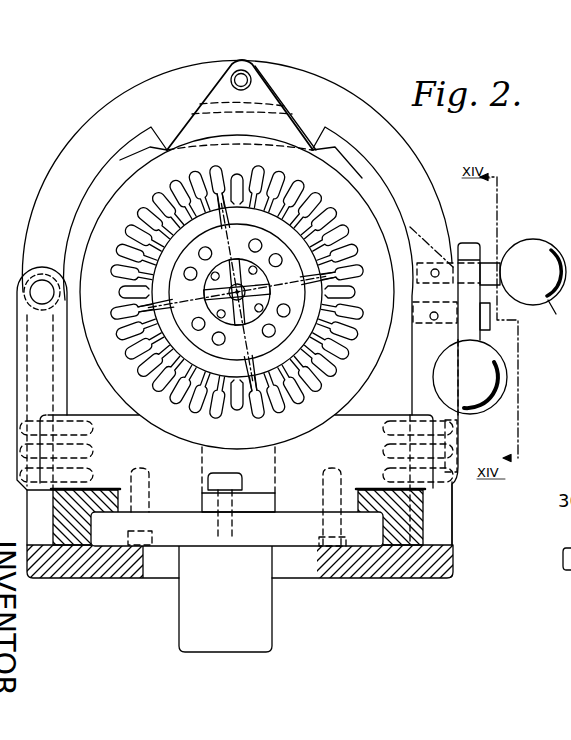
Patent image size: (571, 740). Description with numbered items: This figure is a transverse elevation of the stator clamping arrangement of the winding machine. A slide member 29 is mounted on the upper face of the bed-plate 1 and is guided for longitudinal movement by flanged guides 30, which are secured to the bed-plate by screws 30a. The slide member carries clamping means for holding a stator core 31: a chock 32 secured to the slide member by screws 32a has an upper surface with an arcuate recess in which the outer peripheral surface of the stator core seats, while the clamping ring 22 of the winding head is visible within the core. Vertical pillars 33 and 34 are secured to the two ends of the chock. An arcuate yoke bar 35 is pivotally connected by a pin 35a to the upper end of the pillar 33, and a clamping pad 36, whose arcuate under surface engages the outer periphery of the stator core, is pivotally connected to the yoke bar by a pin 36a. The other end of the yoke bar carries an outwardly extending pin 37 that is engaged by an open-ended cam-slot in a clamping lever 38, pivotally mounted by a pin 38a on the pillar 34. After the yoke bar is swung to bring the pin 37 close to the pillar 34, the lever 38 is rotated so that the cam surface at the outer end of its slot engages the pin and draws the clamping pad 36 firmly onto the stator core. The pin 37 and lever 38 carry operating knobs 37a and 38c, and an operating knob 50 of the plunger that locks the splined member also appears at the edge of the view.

The bed-plate 1 is at (383, 570).
The clamping ring 22 is at (192, 252).
The slide member 29 is at (352, 565).
The flanged guides 30 is at (62, 538).
The screws 30a is at (428, 580).
The stator core 31 is at (350, 198).
The chock 32 is at (180, 474).
The screws 32a is at (146, 547).
The vertical pillar 33 is at (57, 389).
The vertical pillar 34 is at (455, 430).
The arcuate yoke bar 35 is at (343, 96).
The pin 35a is at (32, 287).
The clamping pad 36 is at (256, 66).
The pin 36a is at (231, 78).
The pin 37 is at (455, 270).
The operating knob 37a is at (535, 240).
The clamping lever 38 is at (470, 250).
The pin 38a is at (496, 330).
The operating knob 38c is at (493, 384).
The operating knob 50 is at (559, 314).